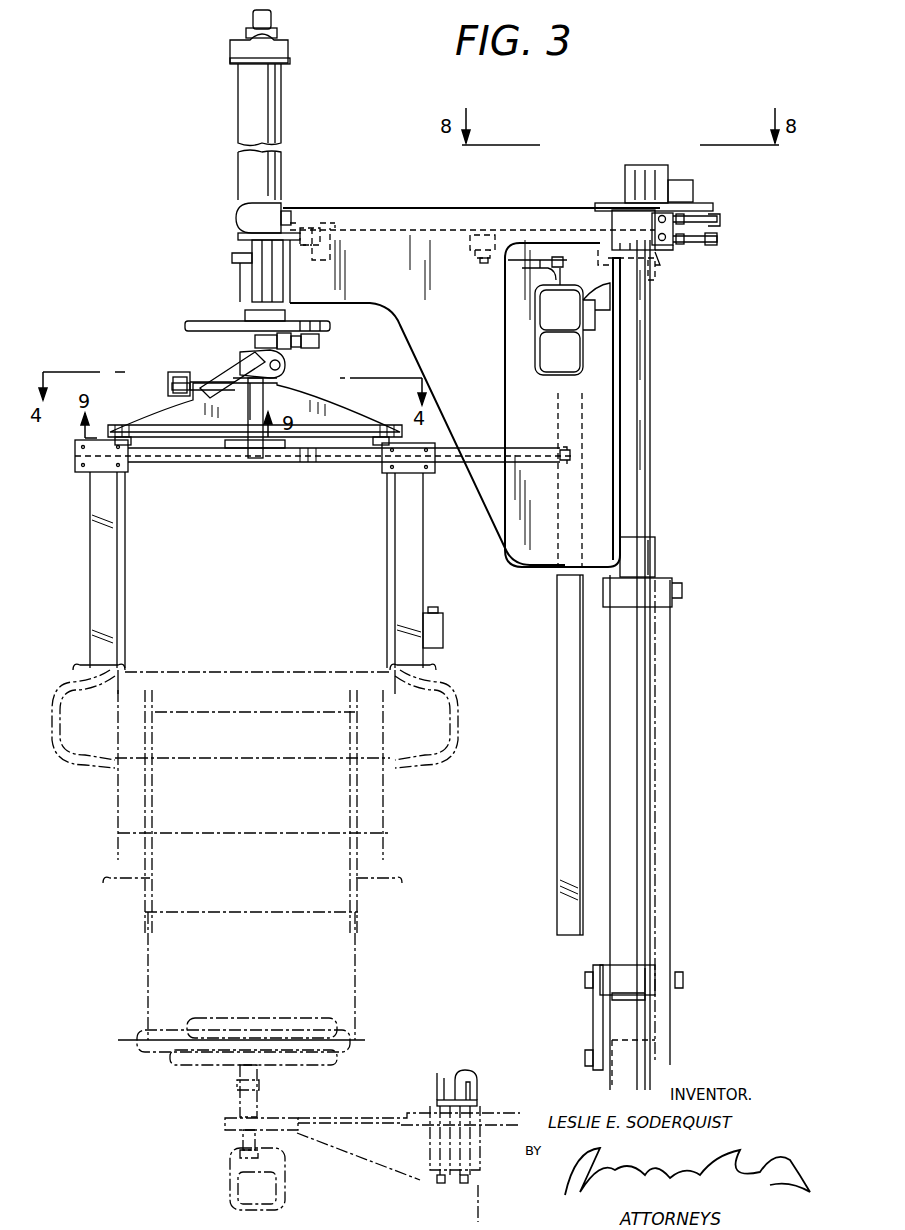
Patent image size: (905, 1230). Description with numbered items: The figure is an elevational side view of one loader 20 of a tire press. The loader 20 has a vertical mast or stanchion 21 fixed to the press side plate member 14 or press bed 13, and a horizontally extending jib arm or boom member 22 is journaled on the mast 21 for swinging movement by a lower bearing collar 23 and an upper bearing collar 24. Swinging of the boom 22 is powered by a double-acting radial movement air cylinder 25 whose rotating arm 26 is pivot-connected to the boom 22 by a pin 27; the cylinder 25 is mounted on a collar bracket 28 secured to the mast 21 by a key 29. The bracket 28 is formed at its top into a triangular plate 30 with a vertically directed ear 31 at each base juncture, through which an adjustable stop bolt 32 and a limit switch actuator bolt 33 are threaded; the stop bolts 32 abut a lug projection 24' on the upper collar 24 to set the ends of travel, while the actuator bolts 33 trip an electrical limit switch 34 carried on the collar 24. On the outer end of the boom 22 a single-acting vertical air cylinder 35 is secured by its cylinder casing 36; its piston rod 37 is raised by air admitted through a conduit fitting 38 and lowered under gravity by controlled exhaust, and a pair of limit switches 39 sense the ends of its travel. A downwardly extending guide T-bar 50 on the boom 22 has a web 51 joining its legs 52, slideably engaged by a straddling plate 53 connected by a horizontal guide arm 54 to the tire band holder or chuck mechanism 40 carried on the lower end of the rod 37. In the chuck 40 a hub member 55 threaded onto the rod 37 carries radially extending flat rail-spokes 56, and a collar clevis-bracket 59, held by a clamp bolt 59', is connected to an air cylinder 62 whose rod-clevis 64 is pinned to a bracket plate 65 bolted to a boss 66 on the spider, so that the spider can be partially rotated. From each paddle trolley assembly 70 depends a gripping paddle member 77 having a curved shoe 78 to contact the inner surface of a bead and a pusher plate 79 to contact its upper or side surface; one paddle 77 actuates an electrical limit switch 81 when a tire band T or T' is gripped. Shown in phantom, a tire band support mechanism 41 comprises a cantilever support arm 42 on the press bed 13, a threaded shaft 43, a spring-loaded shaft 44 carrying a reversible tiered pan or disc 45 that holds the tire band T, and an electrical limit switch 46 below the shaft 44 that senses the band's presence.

The press bed 13 is at (507, 1112).
The press side plate member 14 is at (645, 1055).
The loader 20 is at (520, 212).
The vertical mast or stanchion 21 is at (640, 455).
The jib arm or boom member 22 is at (487, 507).
The lower bearing collar 23 is at (648, 556).
The upper bearing collar 24 is at (619, 205).
The lug projection 24' is at (711, 239).
The radial movement fluid motor or air cylinder device 25 is at (590, 352).
The rotating arm 26 is at (522, 268).
The pin 27 is at (478, 262).
The collar bracket 28 is at (595, 318).
The key 29 is at (652, 280).
The triangular plate 30 is at (640, 250).
The ear 31 is at (668, 252).
The adjustable stop bolt 32 is at (684, 239).
The limit switch actuator bolt 33 is at (684, 219).
The electrical limit switch 34 is at (682, 180).
The reciprocating fluid motor or air cylinder 35 is at (290, 92).
The cylinder casing 36 is at (282, 133).
The piston rod 37 is at (228, 318).
The conduit fitting 38 is at (318, 341).
The electrical limit switches 39 is at (265, 207).
The tire band holder or chuck mechanism 40 is at (88, 560).
The tire band support mechanism 41 is at (363, 1115).
The cantilever support arm 42 is at (365, 1155).
The threaded shaft 43 is at (258, 1095).
The shaft 44 is at (240, 1155).
The pan or disc 45 is at (340, 1020).
The electrical limit switch 46 is at (245, 1195).
The guide T-bar 50 is at (588, 754).
The web 51 is at (583, 647).
The legs 52 is at (583, 696).
The straddling plate 53 is at (570, 450).
The horizontal guide arm 54 is at (450, 463).
The hub member 55 is at (260, 450).
The radially extending arms or flat rail-spokes 56 is at (155, 447).
The collar clevis-bracket 59 is at (221, 345).
The clamp bolt 59' is at (289, 364).
The double-acting reciprocating fluid motor or air cylinder 62 is at (172, 390).
The rod-clevis 64 is at (178, 374).
The bracket plate 65 is at (196, 382).
The boss 66 is at (212, 415).
The paddle trolley assembly 70 is at (72, 470).
The tire band gripping paddle member 77 is at (95, 592).
The shoe 78 is at (118, 692).
The pusher plate 79 is at (75, 667).
The electrical limit switch 81 is at (440, 613).
The tire band T is at (239, 865).
The tire band T' is at (307, 766).